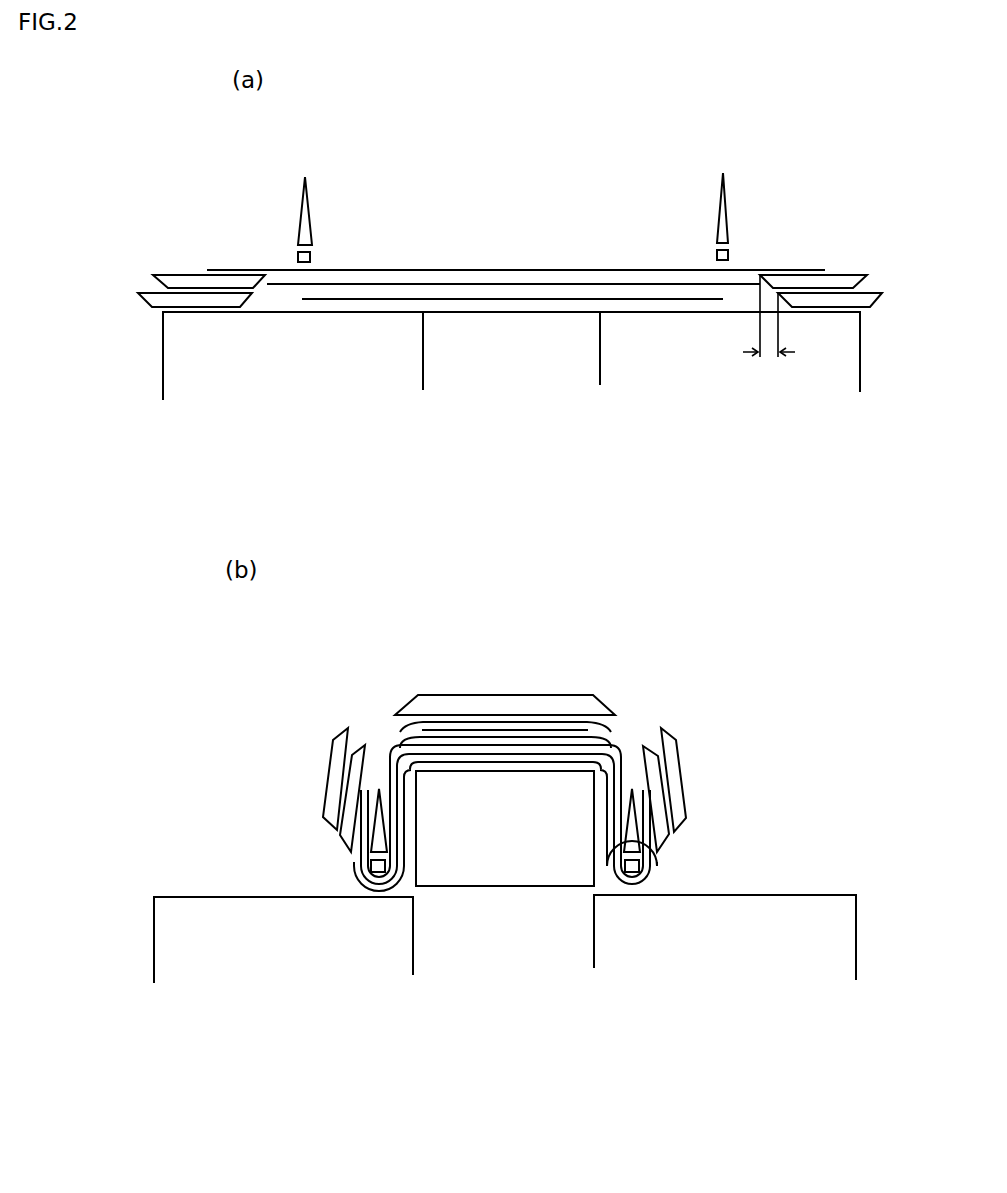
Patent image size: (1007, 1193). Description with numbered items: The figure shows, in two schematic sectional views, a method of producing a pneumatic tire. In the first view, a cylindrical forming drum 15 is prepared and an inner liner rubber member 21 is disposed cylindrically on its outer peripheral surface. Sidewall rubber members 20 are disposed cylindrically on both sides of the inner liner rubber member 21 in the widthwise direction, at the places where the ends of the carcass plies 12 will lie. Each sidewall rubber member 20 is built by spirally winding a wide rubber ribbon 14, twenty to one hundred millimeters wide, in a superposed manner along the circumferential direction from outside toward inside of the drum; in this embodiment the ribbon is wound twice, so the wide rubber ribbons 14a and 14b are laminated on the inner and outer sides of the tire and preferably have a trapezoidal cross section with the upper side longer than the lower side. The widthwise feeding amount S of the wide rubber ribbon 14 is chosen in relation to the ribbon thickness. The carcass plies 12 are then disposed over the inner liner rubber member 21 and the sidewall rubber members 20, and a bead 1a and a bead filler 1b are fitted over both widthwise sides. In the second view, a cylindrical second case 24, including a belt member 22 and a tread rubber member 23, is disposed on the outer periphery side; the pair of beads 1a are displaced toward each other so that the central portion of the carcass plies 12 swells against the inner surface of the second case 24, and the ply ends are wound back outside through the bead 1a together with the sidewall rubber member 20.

The bead 1a is at (313, 255).
The bead filler 1b is at (312, 208).
The carcass plies 12 is at (548, 283).
The wide rubber ribbon 14 is at (267, 225).
The wide rubber ribbon 14a is at (235, 282).
The wide rubber ribbon 14b is at (190, 301).
The forming drum 15 is at (651, 363).
The sidewall rubber member 20 is at (152, 260).
The inner liner rubber member 21 is at (412, 297).
The belt member 22 is at (484, 727).
The tread rubber member 23 is at (530, 695).
The second case 24 is at (555, 645).
The widthwise direction feeding amount S is at (769, 331).